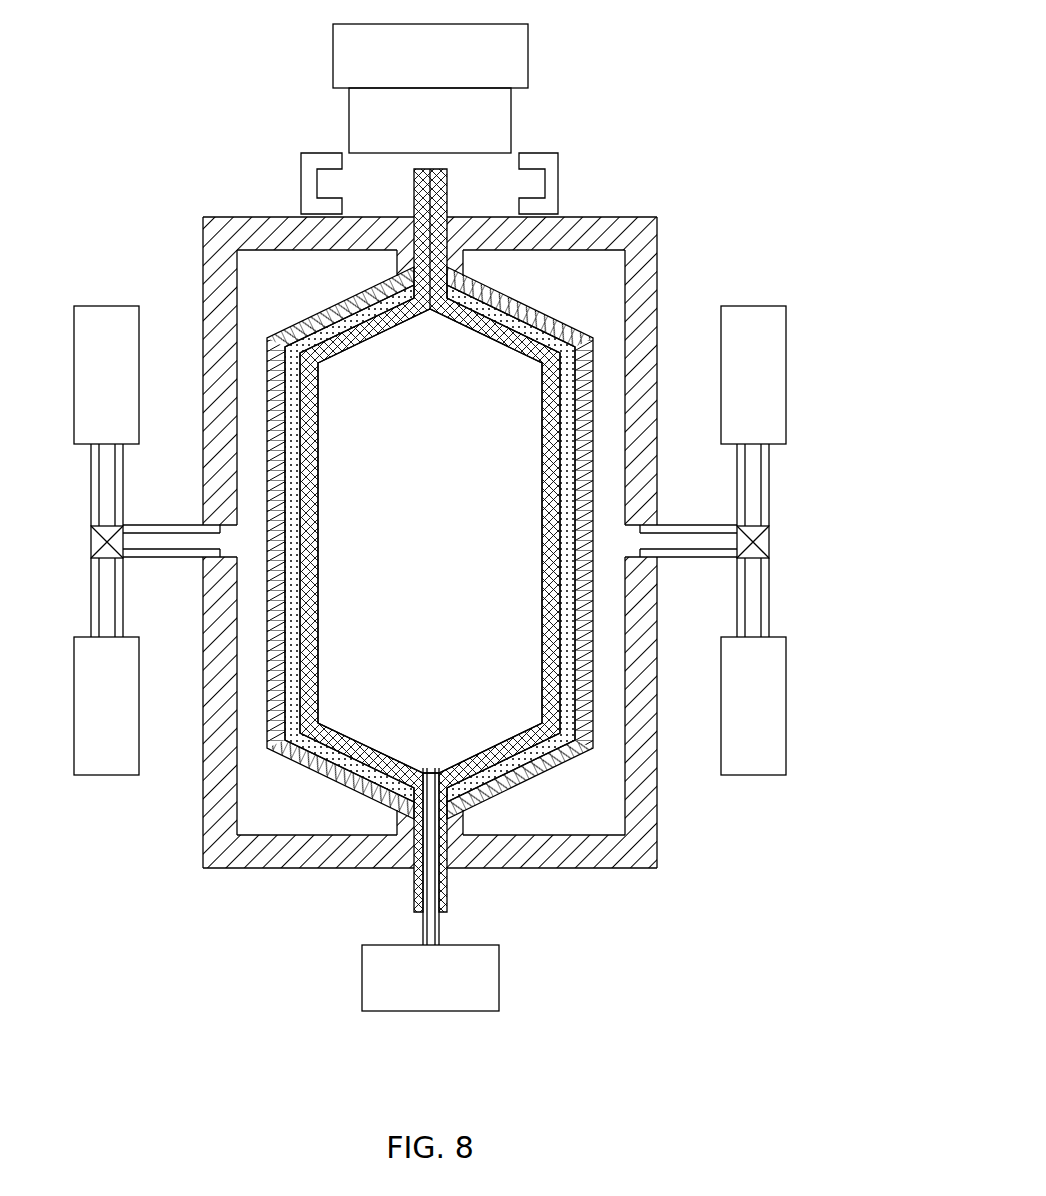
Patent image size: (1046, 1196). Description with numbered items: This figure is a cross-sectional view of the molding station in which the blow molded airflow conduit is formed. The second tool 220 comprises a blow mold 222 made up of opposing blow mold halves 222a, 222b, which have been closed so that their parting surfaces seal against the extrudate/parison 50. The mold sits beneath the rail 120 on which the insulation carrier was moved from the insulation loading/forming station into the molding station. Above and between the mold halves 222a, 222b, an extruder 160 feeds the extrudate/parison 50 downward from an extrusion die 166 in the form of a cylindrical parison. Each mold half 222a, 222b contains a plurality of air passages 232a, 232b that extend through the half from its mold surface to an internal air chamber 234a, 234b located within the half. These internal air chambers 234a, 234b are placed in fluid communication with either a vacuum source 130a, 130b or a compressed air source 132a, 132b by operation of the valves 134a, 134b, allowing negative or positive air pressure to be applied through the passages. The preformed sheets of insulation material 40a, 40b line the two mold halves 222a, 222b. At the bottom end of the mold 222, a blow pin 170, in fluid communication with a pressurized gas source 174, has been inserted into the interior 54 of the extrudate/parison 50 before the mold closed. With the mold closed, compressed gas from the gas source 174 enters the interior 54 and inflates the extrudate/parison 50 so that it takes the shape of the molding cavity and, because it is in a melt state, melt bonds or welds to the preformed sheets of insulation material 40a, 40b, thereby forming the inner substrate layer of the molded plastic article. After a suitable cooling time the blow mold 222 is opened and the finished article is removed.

The second tool 220 is at (630, 76).
The blow mold 222 is at (170, 178).
The first blow mold half 222a is at (196, 236).
The second blow mold half 222b is at (669, 229).
The first internal air chamber 234a is at (262, 824).
The second internal air chamber 234b is at (605, 823).
The rail 120 is at (288, 141).
The extruder 160 is at (430, 56).
The extrusion die 166 is at (430, 120).
The first vacuum source 130a is at (106, 375).
The second vacuum source 130b is at (753, 375).
The first compressed air source 132a is at (106, 706).
The second compressed air source 132b is at (753, 706).
The first valve 134a is at (112, 562).
The second valve 134b is at (765, 557).
The first preformed sheet of insulation material 40a is at (328, 323).
The second preformed sheet of insulation material 40b is at (521, 315).
The first air passages 232a is at (330, 780).
The second air passages 232b is at (530, 780).
The extrudate/parison 50 is at (329, 594).
The interior of the extrudate/parison 54 is at (443, 551).
The blow pin 170 is at (440, 930).
The pressurized gas source 174 is at (430, 978).